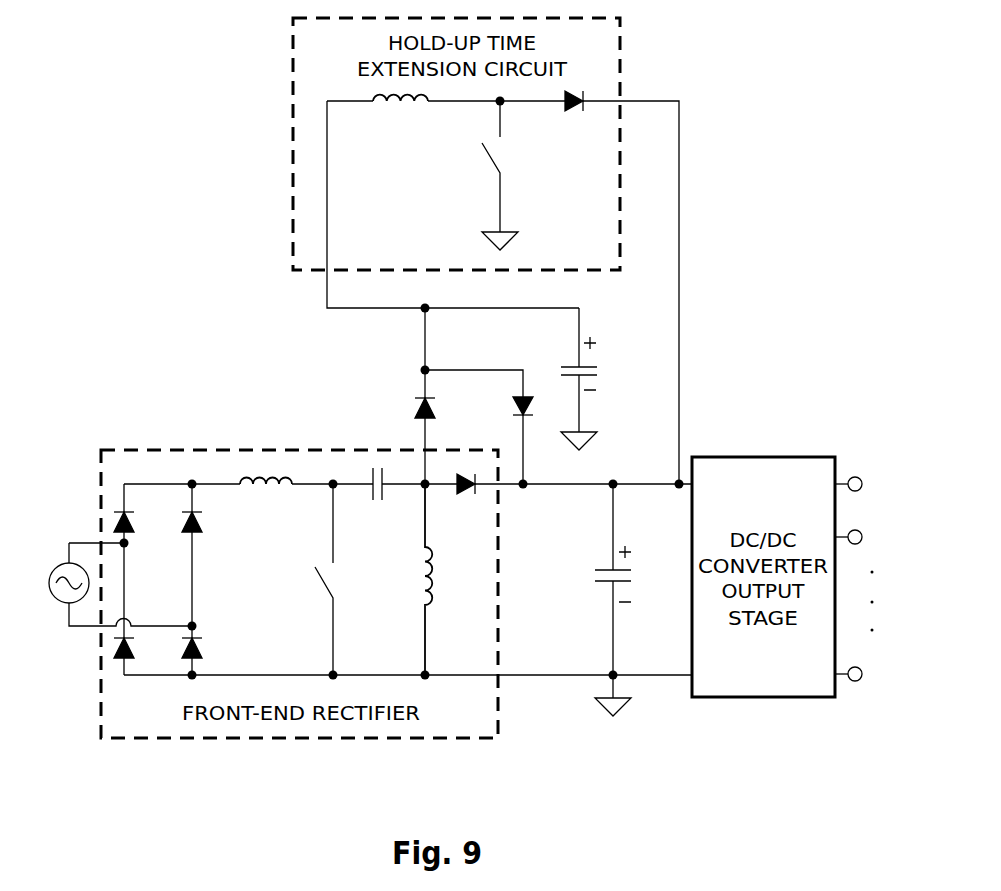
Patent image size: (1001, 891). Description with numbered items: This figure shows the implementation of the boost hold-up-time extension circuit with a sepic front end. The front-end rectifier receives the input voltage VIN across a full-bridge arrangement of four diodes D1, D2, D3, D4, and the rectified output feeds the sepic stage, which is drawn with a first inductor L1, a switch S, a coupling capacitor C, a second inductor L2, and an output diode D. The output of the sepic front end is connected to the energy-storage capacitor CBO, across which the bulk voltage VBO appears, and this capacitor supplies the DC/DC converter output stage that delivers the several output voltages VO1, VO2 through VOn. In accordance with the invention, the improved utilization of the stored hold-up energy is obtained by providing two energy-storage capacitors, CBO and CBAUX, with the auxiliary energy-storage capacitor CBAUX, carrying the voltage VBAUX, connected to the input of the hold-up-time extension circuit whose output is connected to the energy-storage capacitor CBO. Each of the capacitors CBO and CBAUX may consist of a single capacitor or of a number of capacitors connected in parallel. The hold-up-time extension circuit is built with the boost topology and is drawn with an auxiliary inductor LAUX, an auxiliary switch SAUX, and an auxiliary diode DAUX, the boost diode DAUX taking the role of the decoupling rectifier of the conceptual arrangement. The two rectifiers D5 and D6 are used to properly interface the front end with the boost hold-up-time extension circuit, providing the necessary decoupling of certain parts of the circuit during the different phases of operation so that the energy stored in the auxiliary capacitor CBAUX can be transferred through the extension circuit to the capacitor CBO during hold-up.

The auxiliary inductor LAUX is at (400, 119).
The auxiliary switch SAUX is at (476, 175).
The auxiliary diode DAUX is at (580, 120).
The auxiliary energy-storage capacitor CBAUX is at (554, 379).
The auxiliary bulk capacitor voltage VBAUX is at (621, 363).
The rectifier D5 is at (405, 396).
The rectifier D6 is at (479, 427).
The AC input voltage source VIN is at (104, 584).
The rectifier diode D1 is at (140, 526).
The rectifier diode D2 is at (140, 652).
The rectifier diode D3 is at (210, 526).
The rectifier diode D4 is at (210, 652).
The inductor L1 is at (266, 501).
The switch S is at (311, 579).
The capacitor C is at (376, 499).
The inductor L2 is at (409, 579).
The diode D is at (466, 502).
The energy-storage capacitor CBO is at (591, 600).
The output bulk capacitor voltage VBO is at (649, 574).
The output voltage 1 VO1 is at (870, 488).
The output voltage 2 VO2 is at (870, 541).
The output voltage n VOn is at (870, 678).